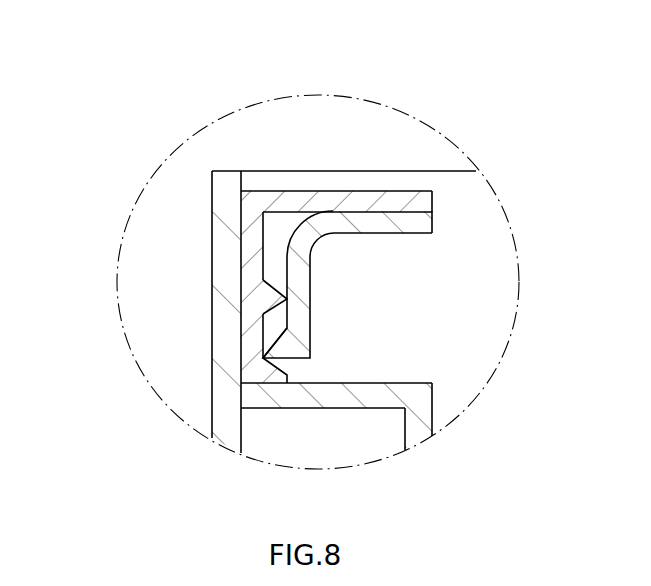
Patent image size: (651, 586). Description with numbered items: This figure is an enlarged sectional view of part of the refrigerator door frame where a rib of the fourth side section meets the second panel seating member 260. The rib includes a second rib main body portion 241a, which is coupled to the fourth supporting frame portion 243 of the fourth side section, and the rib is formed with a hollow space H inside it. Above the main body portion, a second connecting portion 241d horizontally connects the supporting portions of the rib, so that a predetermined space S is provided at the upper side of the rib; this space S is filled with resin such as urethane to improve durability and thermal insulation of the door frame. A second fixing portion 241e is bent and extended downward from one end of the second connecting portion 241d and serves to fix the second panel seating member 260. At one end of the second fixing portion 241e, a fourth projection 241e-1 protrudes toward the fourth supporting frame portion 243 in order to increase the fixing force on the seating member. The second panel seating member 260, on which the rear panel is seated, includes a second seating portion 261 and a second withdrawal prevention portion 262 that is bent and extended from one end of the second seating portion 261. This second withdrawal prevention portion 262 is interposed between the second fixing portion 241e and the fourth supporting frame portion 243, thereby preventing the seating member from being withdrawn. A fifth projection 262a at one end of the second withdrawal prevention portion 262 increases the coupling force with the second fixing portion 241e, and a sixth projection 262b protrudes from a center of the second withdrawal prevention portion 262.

The second panel seating member 260 is at (310, 200).
The second seating portion 261 is at (330, 200).
The second withdrawal prevention portion 262 is at (255, 243).
The fifth projection 262a is at (272, 374).
The sixth projection 262b is at (285, 298).
The second rib main body portion 241a is at (415, 432).
The second connecting portion 241d is at (420, 225).
The second fixing portion 241e is at (300, 304).
The fourth projection 241e-1 is at (273, 348).
The fourth supporting frame portion 243 is at (228, 417).
The space S is at (375, 286).
The hollow space H is at (312, 440).